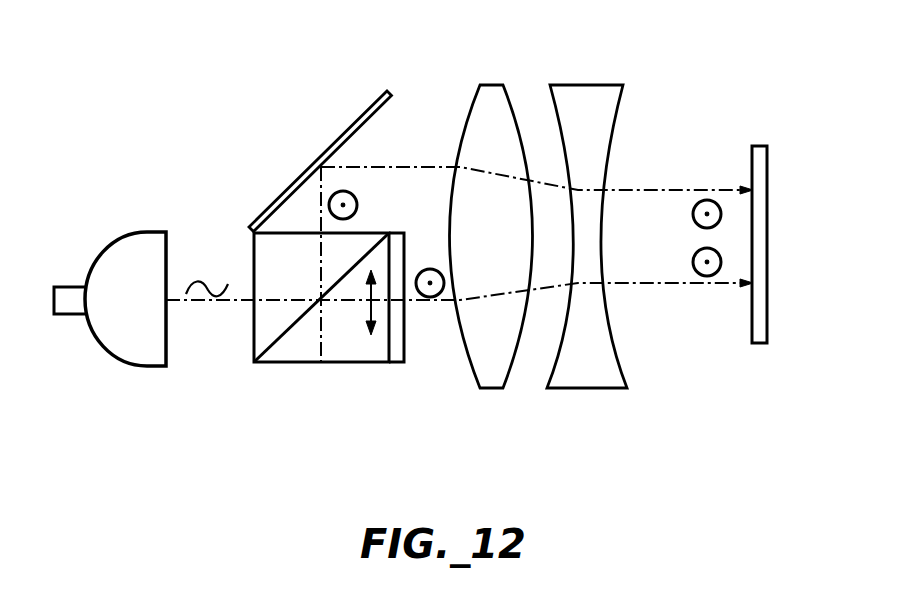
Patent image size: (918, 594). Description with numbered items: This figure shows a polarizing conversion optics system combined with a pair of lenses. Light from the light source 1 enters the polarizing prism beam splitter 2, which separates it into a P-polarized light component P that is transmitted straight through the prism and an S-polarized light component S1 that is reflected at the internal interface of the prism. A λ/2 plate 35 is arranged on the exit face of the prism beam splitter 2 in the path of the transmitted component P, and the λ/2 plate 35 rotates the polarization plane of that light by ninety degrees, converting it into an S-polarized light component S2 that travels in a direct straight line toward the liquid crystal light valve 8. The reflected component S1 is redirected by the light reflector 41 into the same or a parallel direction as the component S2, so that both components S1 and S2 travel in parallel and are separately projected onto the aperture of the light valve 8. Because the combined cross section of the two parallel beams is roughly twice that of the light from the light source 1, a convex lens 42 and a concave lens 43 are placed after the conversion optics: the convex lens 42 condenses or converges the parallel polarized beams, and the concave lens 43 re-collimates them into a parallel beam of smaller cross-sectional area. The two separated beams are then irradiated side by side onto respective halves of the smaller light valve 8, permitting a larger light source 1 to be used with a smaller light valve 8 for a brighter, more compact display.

The light source 1 is at (139, 362).
The polarizing prism beam splitter 2 is at (326, 358).
The λ/2 plate 35 is at (395, 363).
The light reflector 41 is at (336, 142).
The convex lens 42 is at (491, 93).
The concave lens 43 is at (599, 95).
The liquid crystal light valve 8 is at (758, 147).
The S-polarized light component S1 is at (358, 204).
The S-polarized light component S2 is at (692, 262).
The P-polarized light component P is at (366, 314).